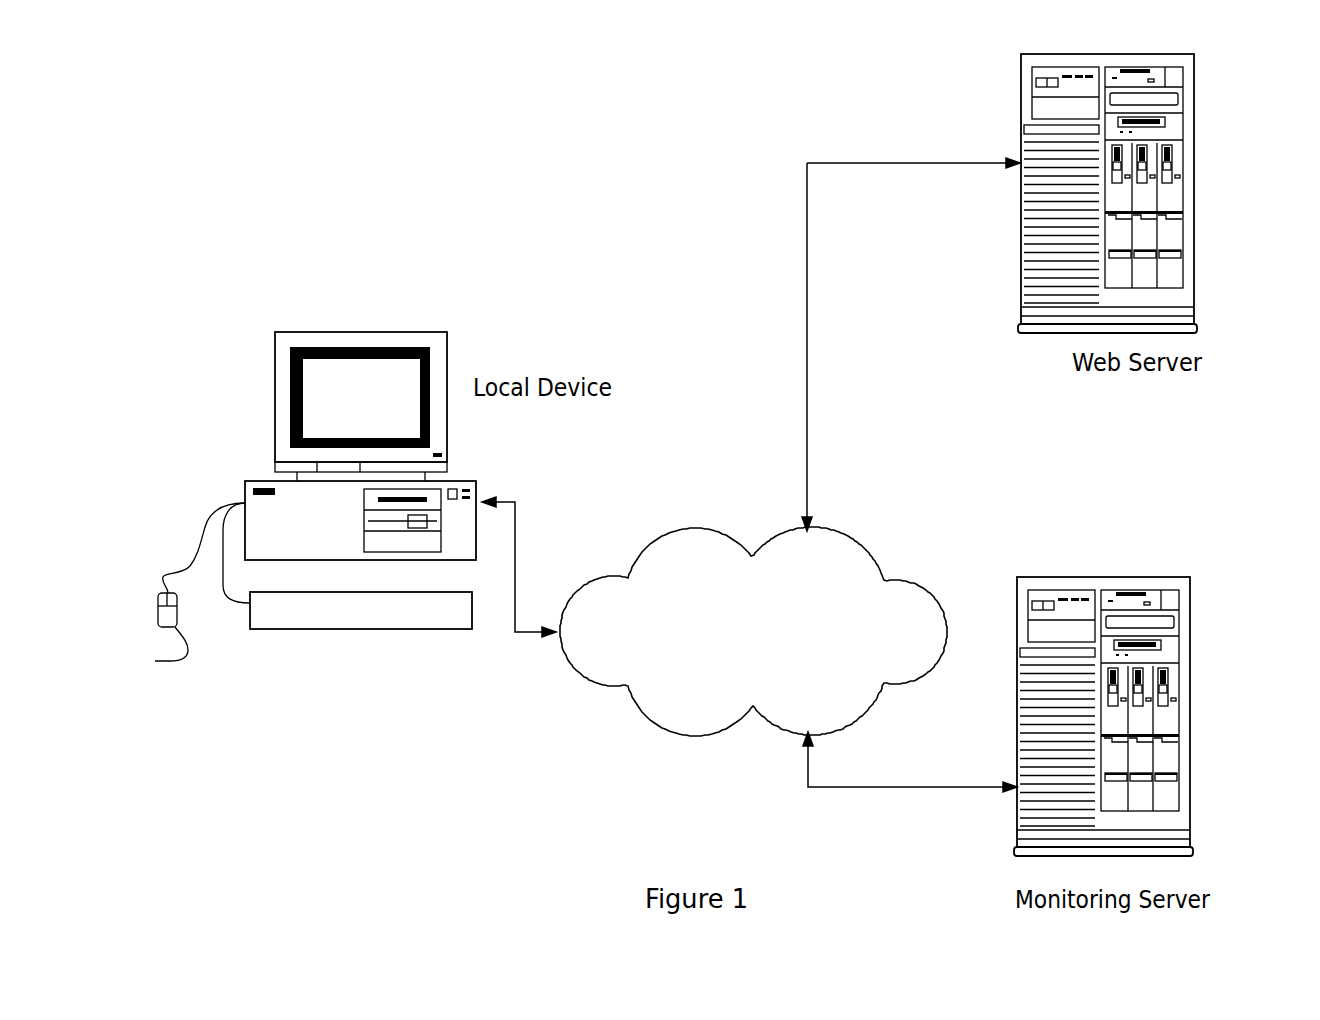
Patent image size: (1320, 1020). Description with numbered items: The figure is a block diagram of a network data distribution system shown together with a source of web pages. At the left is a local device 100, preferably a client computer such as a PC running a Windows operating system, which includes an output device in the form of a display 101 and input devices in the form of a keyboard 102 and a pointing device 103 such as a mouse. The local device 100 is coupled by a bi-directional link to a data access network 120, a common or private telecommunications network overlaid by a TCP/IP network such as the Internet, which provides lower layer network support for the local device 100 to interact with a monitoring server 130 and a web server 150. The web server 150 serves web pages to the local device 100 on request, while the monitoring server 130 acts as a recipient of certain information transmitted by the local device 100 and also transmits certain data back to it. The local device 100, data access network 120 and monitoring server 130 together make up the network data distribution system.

The local device 100 is at (275, 480).
The display 101 is at (275, 365).
The keyboard 102 is at (407, 630).
The pointing device 103 is at (155, 661).
The data access network 120 is at (692, 530).
The monitoring server 130 is at (1157, 577).
The web server 150 is at (1200, 130).